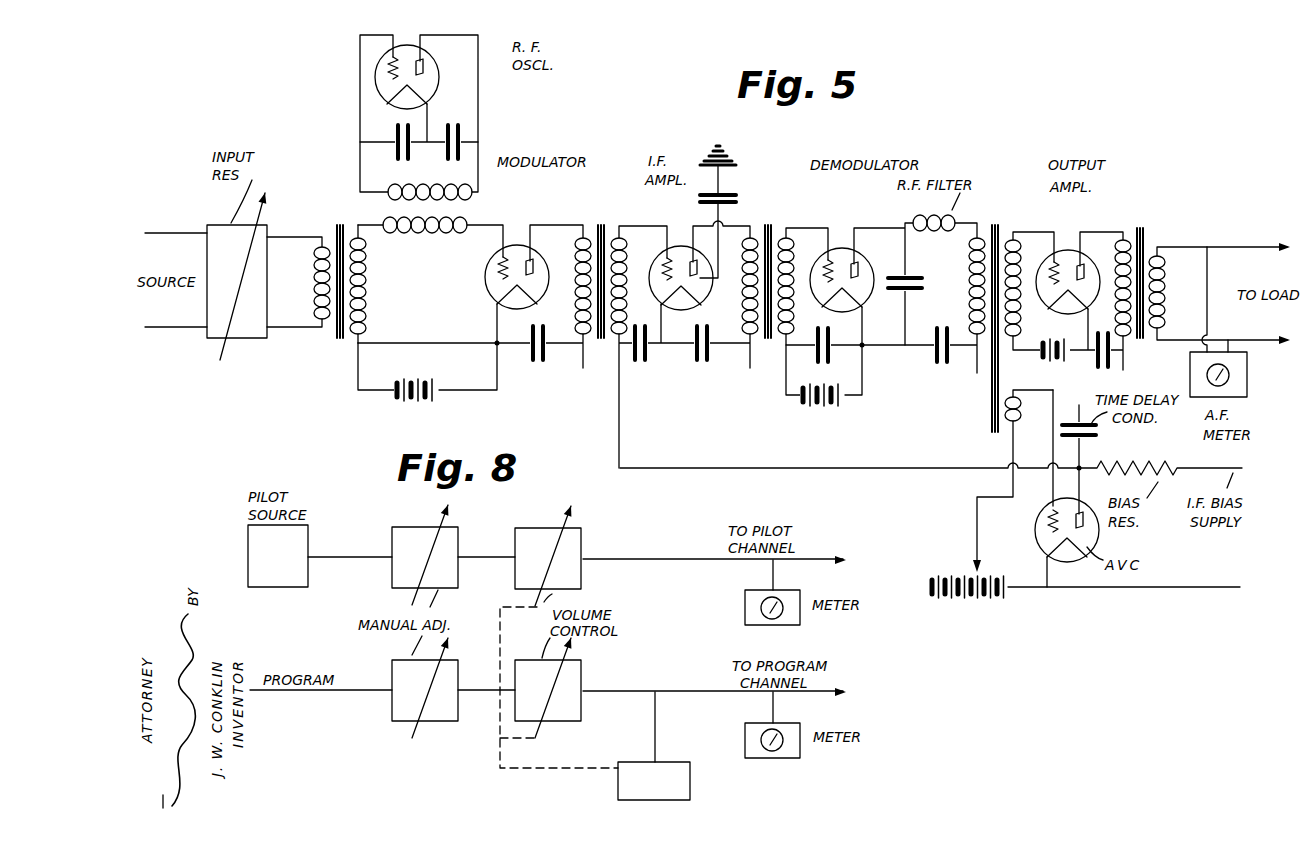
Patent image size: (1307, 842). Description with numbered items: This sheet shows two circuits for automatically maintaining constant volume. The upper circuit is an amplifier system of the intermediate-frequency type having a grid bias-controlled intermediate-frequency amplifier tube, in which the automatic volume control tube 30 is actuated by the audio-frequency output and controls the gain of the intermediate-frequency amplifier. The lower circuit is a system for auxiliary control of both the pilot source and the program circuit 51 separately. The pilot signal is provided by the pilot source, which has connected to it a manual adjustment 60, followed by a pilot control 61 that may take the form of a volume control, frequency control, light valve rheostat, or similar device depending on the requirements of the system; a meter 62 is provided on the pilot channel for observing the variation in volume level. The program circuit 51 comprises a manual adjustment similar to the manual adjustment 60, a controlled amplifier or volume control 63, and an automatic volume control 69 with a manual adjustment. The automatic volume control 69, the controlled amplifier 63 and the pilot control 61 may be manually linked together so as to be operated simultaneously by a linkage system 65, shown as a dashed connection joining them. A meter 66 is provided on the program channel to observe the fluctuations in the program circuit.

In FIG. 5, the automatic volume control tube 30 is at (1033, 535).
In FIG. 8, the program circuit 51 is at (318, 692).
In FIG. 8, the manual adjustment 60 is at (460, 547).
In FIG. 8, the pilot control 61 is at (585, 545).
In FIG. 8, the meter 62 is at (802, 620).
In FIG. 8, the controlled amplifier or volume control 63 is at (587, 673).
In FIG. 8, the linkage system 65 is at (527, 770).
In FIG. 8, the meter 66 is at (802, 750).
In FIG. 8, the automatic volume control 69 is at (693, 797).